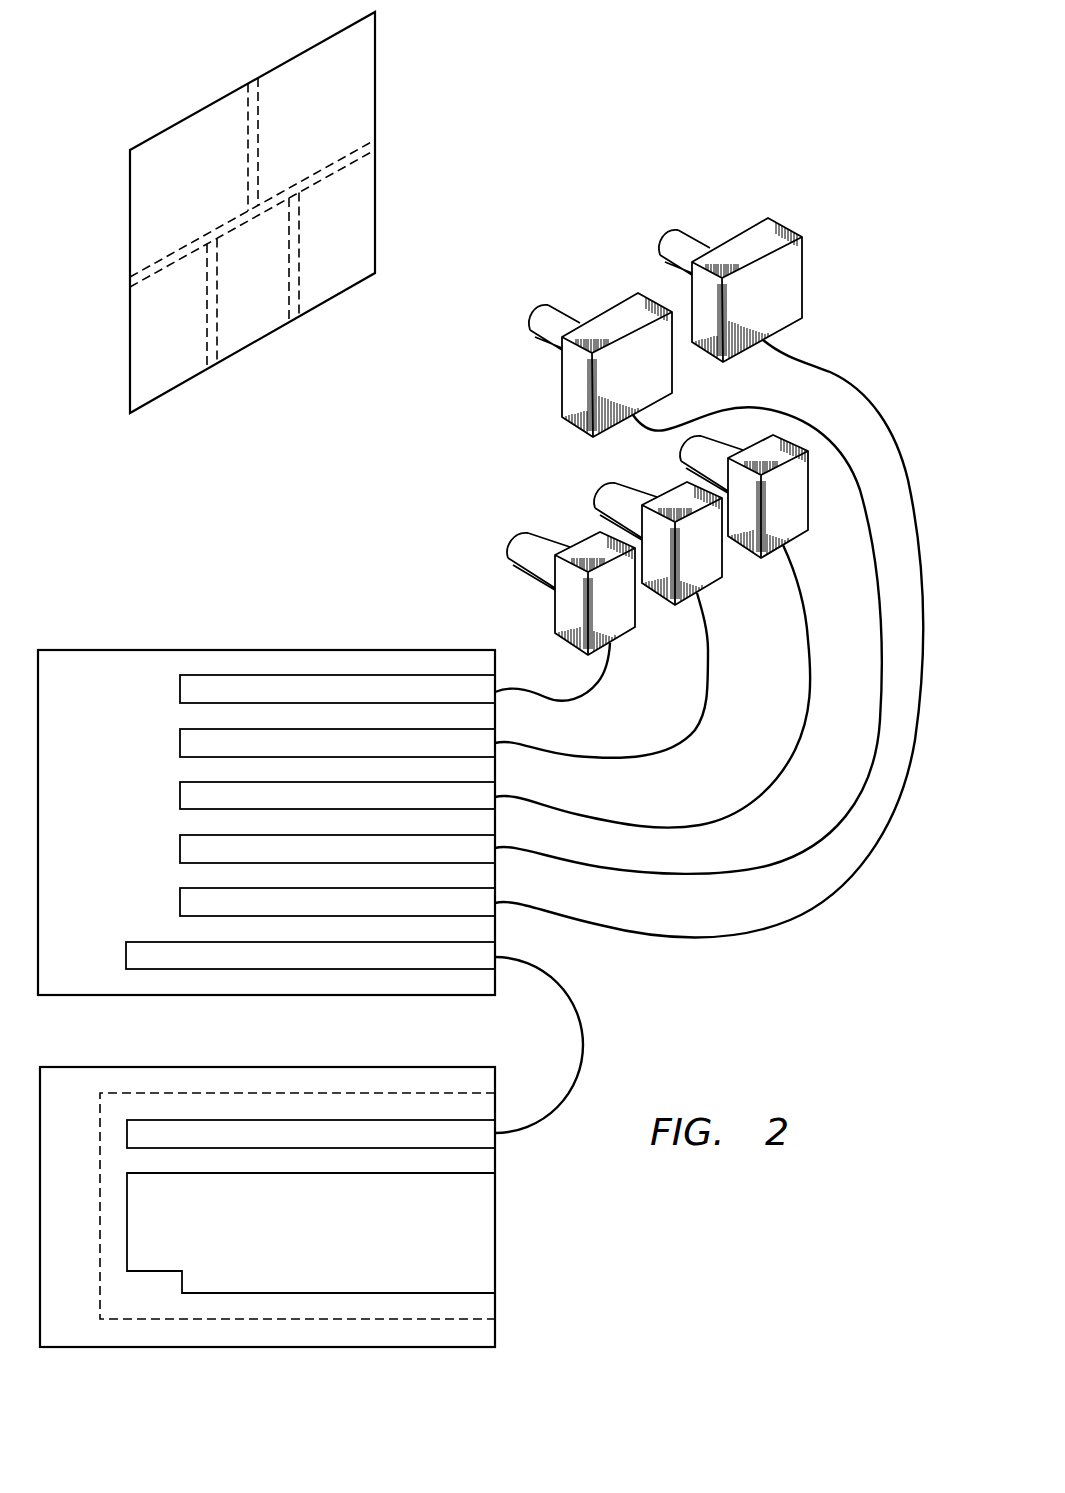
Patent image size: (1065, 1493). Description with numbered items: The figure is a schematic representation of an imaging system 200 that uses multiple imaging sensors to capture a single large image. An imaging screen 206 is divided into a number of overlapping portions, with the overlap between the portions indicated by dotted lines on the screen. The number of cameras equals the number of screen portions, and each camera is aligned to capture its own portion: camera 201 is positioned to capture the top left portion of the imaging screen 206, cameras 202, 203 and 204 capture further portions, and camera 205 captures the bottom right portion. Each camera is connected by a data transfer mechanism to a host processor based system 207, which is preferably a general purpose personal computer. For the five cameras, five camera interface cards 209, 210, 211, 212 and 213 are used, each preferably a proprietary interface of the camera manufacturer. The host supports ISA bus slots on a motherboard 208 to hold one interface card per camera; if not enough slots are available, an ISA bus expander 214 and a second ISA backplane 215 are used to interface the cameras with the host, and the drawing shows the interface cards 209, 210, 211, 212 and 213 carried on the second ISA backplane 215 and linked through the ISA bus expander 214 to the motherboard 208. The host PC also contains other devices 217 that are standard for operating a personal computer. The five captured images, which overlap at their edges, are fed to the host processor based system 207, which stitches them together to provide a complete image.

The imaging system 200 is at (767, 127).
The camera 201 is at (612, 309).
The camera 202 is at (742, 234).
The camera 203 is at (627, 631).
The camera 204 is at (715, 581).
The camera 205 is at (803, 533).
The imaging screen 206 is at (190, 116).
The host processor based system 207 is at (100, 1067).
The motherboard 208 is at (480, 1318).
The camera interface card 209 is at (180, 690).
The camera interface card 210 is at (180, 744).
The camera interface card 211 is at (180, 797).
The camera interface card 212 is at (180, 850).
The camera interface card 213 is at (180, 903).
The ISA bus expander 214 is at (126, 957).
The second ISA backplane 215 is at (100, 650).
The other devices 217 is at (495, 1237).